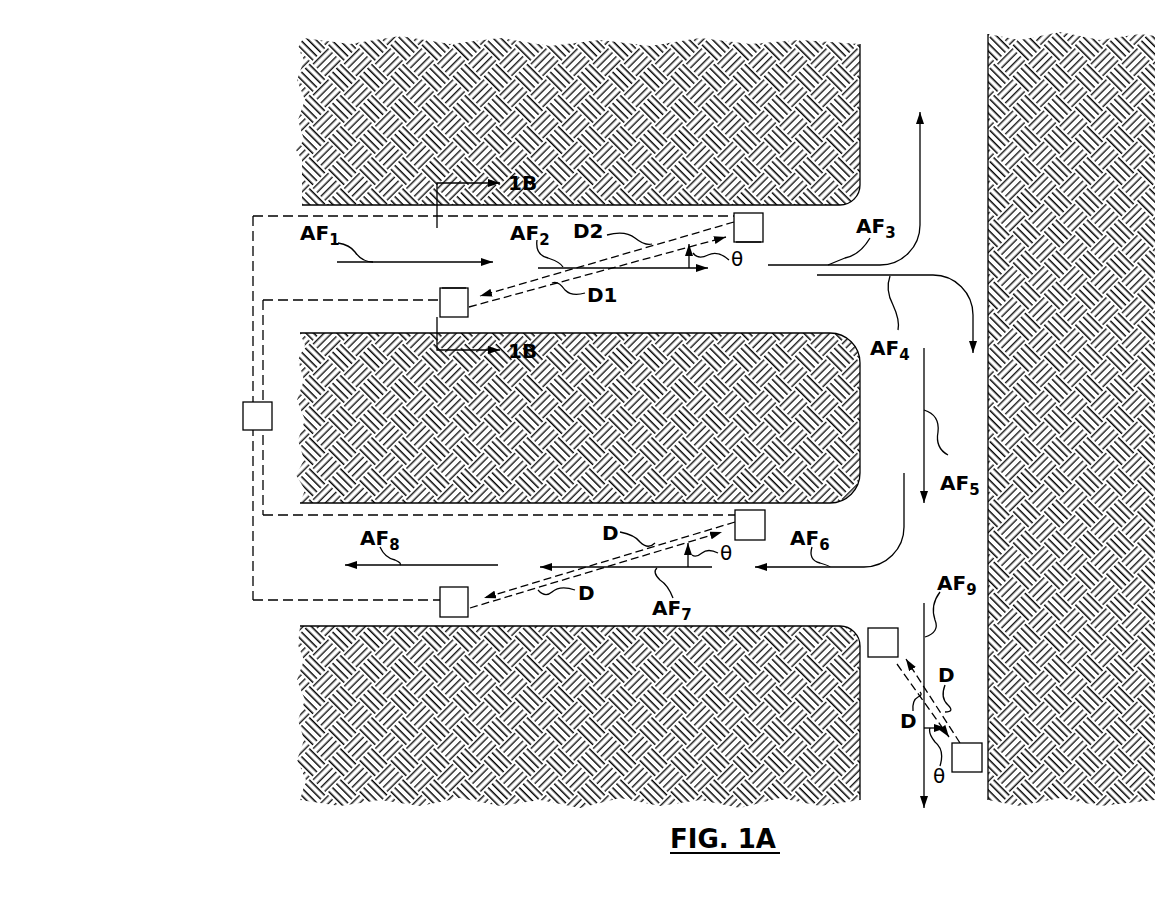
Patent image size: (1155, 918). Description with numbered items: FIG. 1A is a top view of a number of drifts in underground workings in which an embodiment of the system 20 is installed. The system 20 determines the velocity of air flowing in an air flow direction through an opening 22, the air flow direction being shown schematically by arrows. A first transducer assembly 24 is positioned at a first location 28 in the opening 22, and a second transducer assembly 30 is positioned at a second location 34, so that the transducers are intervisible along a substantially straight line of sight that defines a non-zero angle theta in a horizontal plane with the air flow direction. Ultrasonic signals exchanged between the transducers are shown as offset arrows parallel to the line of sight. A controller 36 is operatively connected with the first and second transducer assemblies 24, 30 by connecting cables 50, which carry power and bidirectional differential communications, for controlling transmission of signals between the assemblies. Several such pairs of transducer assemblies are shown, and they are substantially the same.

The system 20 is at (461, 371).
The opening 22 is at (726, 322).
The first transducer assembly 24 is at (440, 289).
The first location 28 is at (455, 287).
The second transducer assembly 30 is at (764, 229).
The second location 34 is at (756, 244).
The controller 36 is at (243, 415).
The connecting cables 50 is at (285, 215).